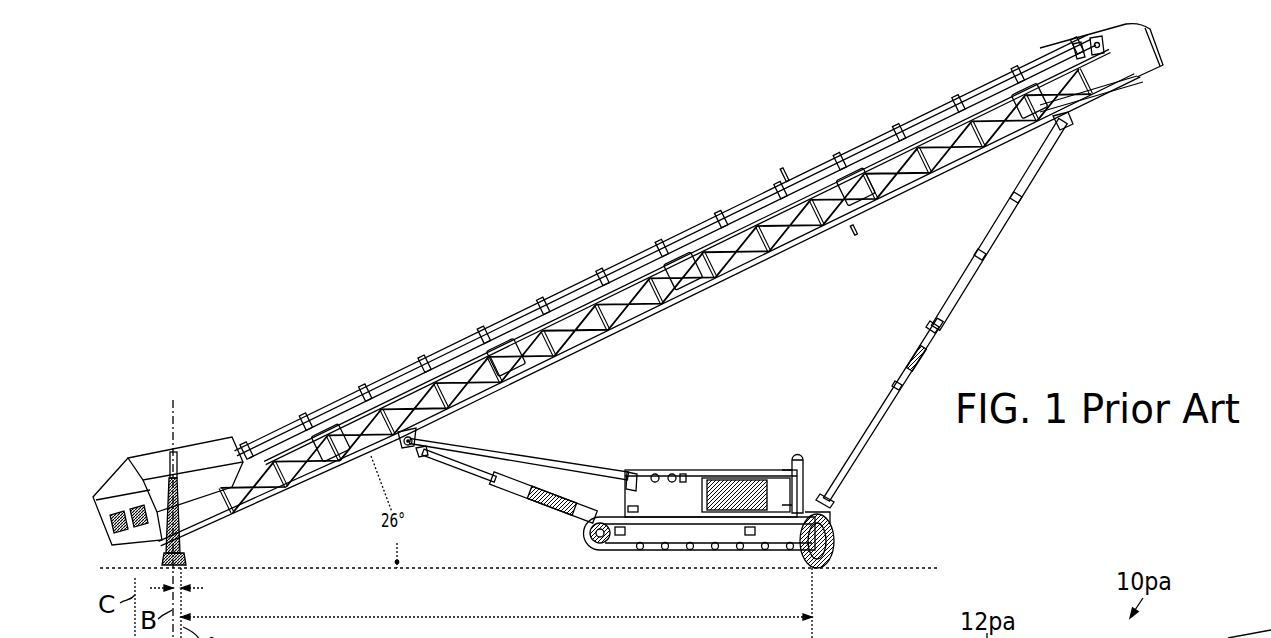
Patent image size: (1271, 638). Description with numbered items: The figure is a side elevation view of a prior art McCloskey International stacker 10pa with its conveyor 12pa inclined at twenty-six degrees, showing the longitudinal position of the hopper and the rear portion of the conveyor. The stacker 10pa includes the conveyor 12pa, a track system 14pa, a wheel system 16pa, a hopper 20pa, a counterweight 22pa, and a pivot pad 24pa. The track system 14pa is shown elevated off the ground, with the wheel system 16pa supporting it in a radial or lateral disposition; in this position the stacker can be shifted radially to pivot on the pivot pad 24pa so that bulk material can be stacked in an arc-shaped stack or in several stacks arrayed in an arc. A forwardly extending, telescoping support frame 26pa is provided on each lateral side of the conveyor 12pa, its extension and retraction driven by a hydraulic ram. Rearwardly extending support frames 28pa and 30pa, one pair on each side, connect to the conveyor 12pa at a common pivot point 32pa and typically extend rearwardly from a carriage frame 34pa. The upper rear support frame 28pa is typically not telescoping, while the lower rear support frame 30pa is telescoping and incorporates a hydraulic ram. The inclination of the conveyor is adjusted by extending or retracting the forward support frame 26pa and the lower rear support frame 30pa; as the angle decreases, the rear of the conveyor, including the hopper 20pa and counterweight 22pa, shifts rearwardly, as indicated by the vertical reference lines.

The stacker 10pa is at (341, 361).
The conveyor 12pa is at (872, 139).
The track system 14pa is at (690, 559).
The wheel system 16pa is at (849, 521).
The hopper 20pa is at (166, 455).
The counterweight 22pa is at (100, 497).
The pivot pad 24pa is at (190, 570).
The forwardly extending telescoping support frame 26pa is at (1030, 194).
The upper rear support frame 28pa is at (507, 452).
The lower rear support frame 30pa is at (557, 510).
The common pivot point 32pa is at (410, 446).
The carriage frame 34pa is at (667, 457).